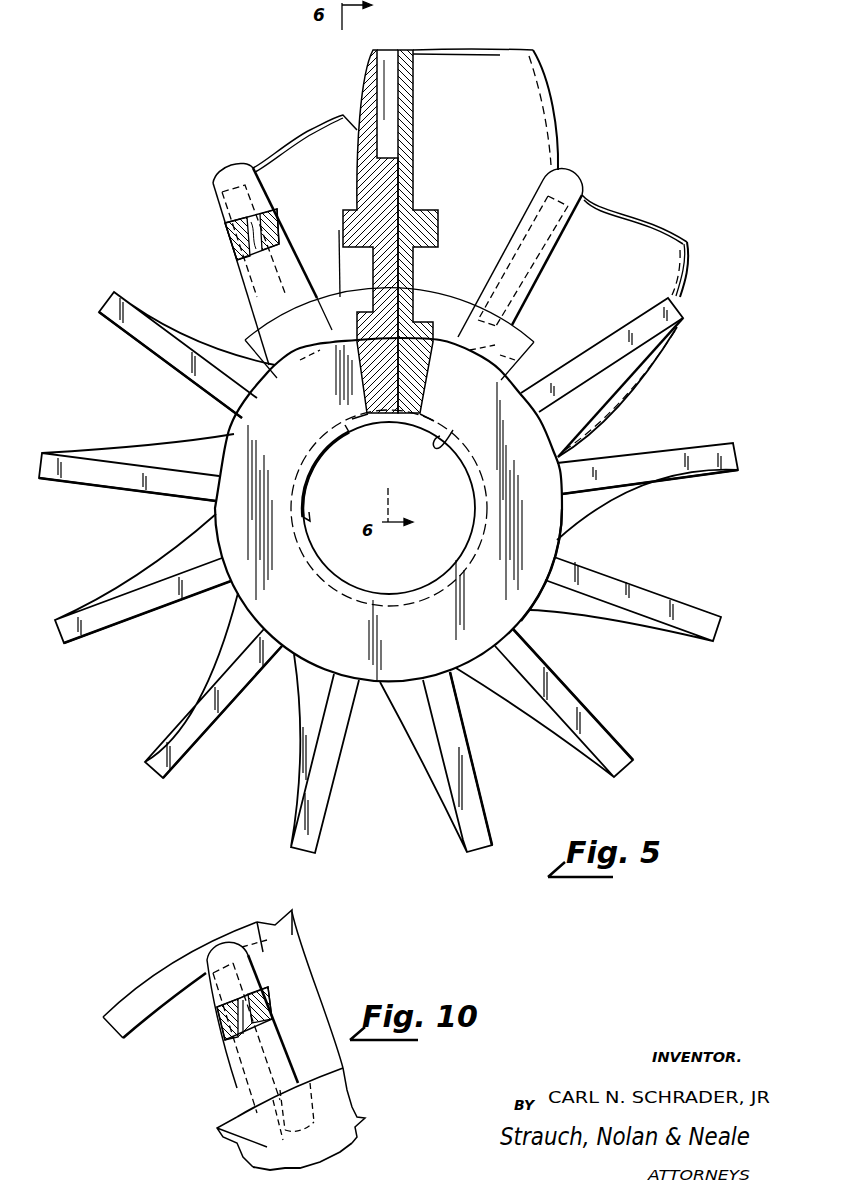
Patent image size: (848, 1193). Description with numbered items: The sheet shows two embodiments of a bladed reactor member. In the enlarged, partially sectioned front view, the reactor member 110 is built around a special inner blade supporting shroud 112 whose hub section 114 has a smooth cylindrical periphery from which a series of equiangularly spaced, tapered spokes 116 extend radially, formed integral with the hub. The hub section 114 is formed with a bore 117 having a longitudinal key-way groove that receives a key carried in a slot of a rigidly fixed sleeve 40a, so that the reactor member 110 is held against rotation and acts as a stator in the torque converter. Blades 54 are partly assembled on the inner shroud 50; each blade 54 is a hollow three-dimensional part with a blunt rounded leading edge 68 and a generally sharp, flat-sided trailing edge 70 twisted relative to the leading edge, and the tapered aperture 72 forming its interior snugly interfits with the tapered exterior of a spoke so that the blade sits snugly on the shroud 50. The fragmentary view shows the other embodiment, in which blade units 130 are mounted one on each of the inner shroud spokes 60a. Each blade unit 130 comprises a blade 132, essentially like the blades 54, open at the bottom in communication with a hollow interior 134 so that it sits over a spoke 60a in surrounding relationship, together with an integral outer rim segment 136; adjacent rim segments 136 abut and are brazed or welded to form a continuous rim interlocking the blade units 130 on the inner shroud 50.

In FIG. 5, the sleeve 40a is at (323, 482).
In FIG. 5, the inner blade supporting shroud 50 is at (481, 761).
In FIG. 10, the inner blade supporting shroud 50 is at (352, 1122).
In FIG. 5, the blade 54 is at (552, 70).
In FIG. 10, the spoke 60a is at (268, 1005).
In FIG. 5, the leading edge 68 is at (365, 75).
In FIG. 5, the trailing edge 70 is at (472, 62).
In FIG. 5, the aperture 72 is at (396, 56).
In FIG. 5, the reactor member 110 is at (640, 425).
In FIG. 5, the inner blade supporting shroud 112 is at (564, 549).
In FIG. 5, the hub section 114 is at (383, 648).
In FIG. 5, the spoke 116 is at (394, 176).
In FIG. 5, the bore 117 is at (453, 431).
In FIG. 5, the blade unit 130 is at (306, 128).
In FIG. 10, the blade unit 130 is at (311, 942).
In FIG. 5, the blade 132 is at (283, 152).
In FIG. 10, the blade 132 is at (283, 912).
In FIG. 5, the hollow interior 134 is at (245, 237).
In FIG. 10, the hollow interior 134 is at (222, 1022).
In FIG. 10, the outer rim segment 136 is at (138, 1000).